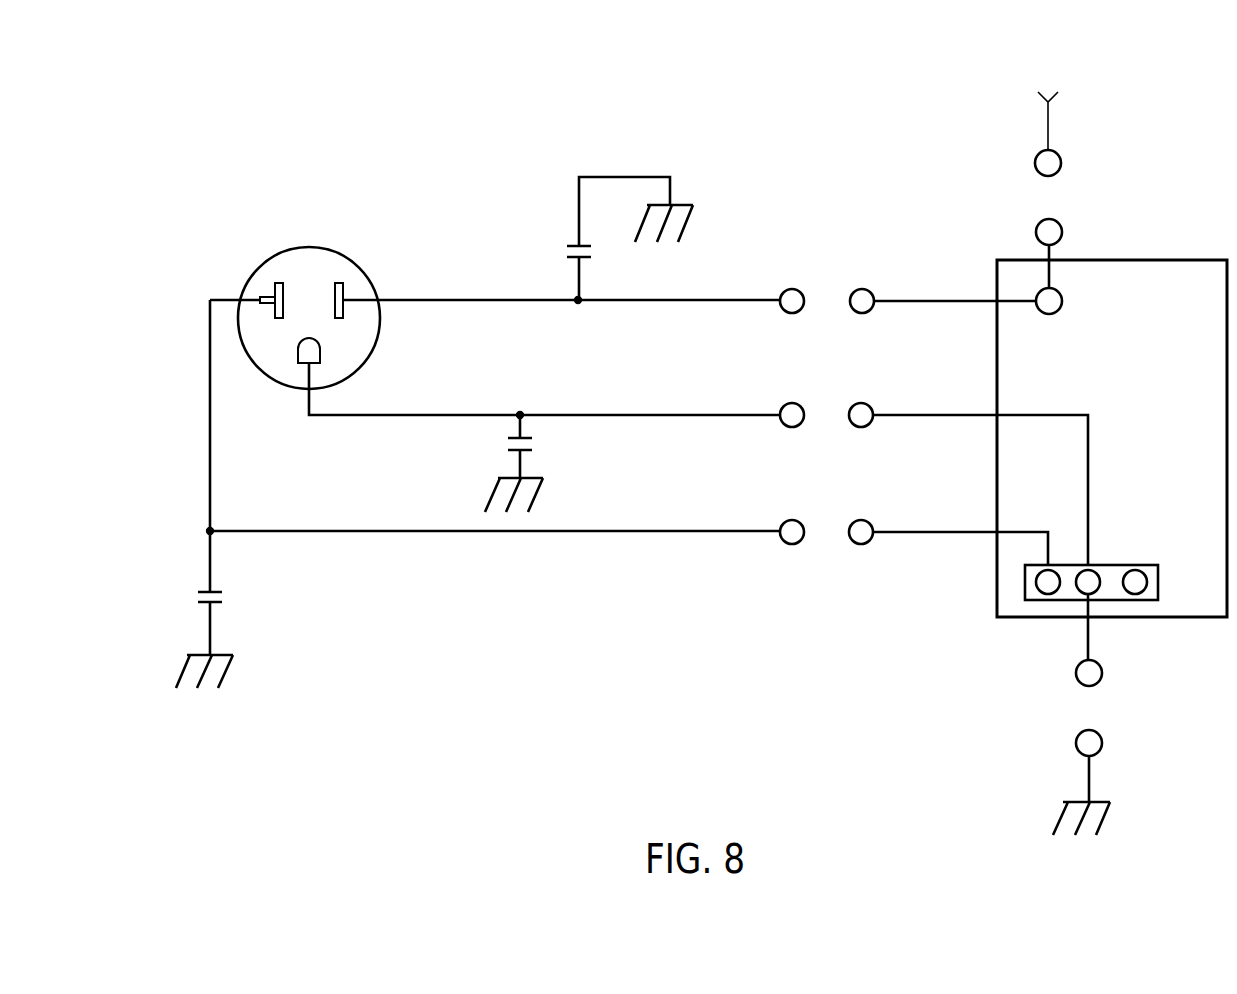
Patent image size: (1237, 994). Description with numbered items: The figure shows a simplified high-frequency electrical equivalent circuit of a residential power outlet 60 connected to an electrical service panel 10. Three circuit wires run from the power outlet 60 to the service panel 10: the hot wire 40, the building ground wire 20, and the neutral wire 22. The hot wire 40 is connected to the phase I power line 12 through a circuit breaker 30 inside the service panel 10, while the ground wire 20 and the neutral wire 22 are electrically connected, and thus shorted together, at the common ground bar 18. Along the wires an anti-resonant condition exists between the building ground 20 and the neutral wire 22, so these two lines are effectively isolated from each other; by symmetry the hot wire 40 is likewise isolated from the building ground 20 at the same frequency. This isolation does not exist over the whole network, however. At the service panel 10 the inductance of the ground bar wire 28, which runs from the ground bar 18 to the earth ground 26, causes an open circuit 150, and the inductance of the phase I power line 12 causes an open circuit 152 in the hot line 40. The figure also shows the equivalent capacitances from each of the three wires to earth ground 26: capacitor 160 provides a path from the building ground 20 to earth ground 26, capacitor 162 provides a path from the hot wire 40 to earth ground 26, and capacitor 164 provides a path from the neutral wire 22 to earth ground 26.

The service panel 10 is at (1164, 247).
The phase I power line 12 is at (1048, 116).
The ground bar 18 is at (1145, 563).
The ground wire 20 is at (907, 408).
The neutral wire 22 is at (907, 525).
The earth ground 26 is at (694, 191).
The ground bar wire 28 is at (1090, 773).
The circuit breaker 30 is at (1052, 314).
The hot wire 40 is at (1026, 246).
The power outlet 60 is at (320, 244).
The open circuit 150 is at (1082, 716).
The open circuit 152 is at (1068, 196).
The capacitor 160 is at (541, 445).
The capacitor 162 is at (560, 249).
The capacitor 164 is at (234, 594).